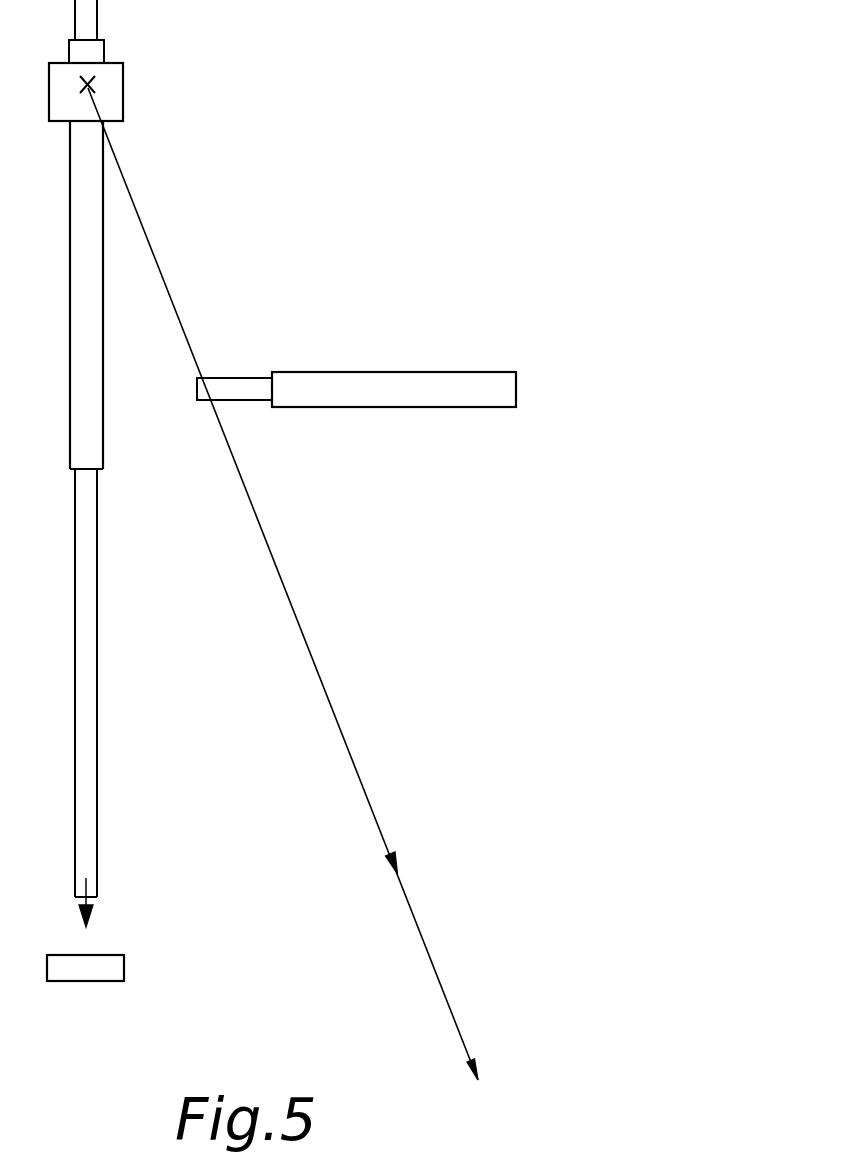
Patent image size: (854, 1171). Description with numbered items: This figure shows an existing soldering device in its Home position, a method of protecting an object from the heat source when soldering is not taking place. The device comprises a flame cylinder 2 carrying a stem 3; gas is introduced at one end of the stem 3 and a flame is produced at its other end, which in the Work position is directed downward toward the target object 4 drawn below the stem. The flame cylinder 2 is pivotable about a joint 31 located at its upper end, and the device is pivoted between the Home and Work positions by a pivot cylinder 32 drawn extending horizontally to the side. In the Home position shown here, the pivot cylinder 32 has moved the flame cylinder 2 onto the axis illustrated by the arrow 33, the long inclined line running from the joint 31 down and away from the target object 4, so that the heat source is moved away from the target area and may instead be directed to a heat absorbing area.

The flame cylinder 2 is at (93, 447).
The stem 3 is at (90, 690).
The target object 4 is at (105, 958).
The joint 31 is at (90, 86).
The pivot cylinder 32 is at (413, 378).
The arrow 33 is at (355, 760).